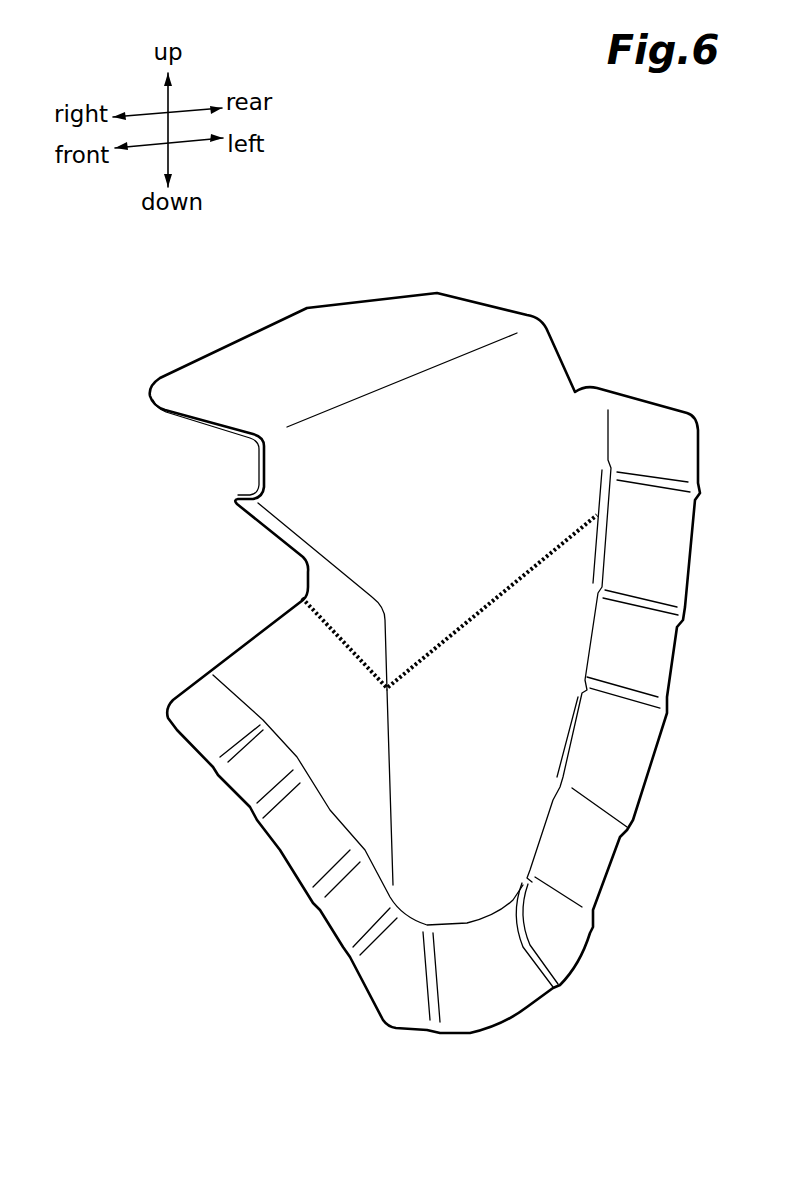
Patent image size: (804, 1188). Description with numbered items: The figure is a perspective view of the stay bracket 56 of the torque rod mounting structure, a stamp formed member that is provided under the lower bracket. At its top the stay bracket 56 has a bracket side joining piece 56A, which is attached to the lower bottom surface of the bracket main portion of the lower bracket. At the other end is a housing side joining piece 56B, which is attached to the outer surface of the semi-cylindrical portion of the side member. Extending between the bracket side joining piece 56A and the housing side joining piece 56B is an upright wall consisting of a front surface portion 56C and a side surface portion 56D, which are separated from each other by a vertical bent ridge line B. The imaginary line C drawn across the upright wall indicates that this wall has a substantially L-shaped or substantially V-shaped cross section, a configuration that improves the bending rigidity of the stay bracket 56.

The stay bracket 56 is at (612, 358).
The bracket side joining piece 56A is at (375, 320).
The housing side joining piece 56B is at (620, 763).
The front surface portion 56C is at (275, 677).
The side surface portion 56D is at (543, 640).
The vertical bent ridge line B is at (390, 783).
The imaginary line C is at (493, 597).